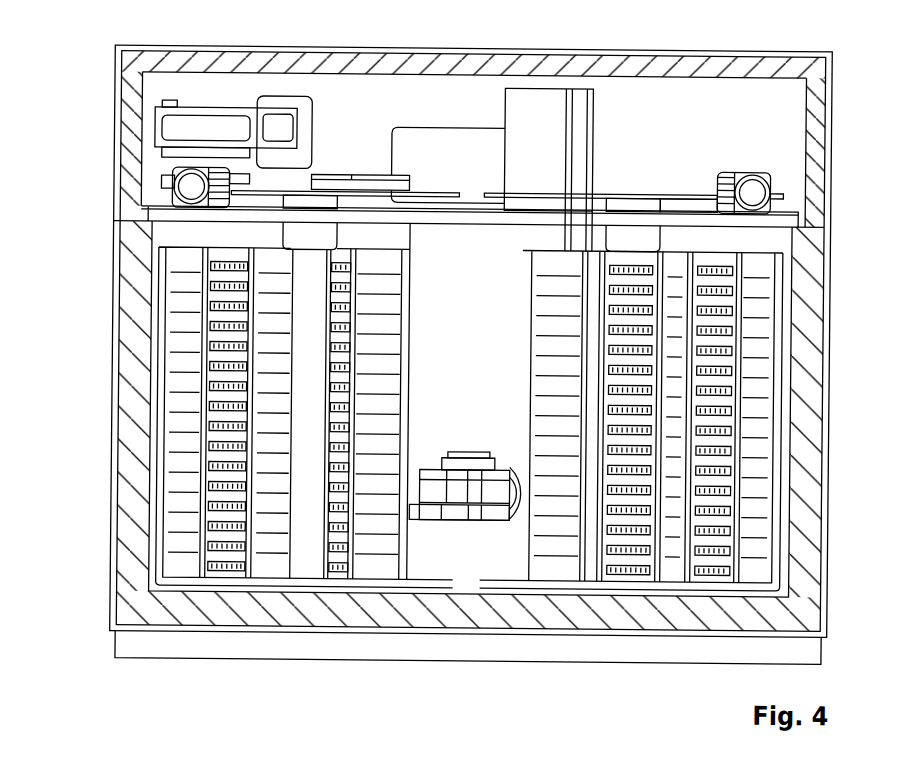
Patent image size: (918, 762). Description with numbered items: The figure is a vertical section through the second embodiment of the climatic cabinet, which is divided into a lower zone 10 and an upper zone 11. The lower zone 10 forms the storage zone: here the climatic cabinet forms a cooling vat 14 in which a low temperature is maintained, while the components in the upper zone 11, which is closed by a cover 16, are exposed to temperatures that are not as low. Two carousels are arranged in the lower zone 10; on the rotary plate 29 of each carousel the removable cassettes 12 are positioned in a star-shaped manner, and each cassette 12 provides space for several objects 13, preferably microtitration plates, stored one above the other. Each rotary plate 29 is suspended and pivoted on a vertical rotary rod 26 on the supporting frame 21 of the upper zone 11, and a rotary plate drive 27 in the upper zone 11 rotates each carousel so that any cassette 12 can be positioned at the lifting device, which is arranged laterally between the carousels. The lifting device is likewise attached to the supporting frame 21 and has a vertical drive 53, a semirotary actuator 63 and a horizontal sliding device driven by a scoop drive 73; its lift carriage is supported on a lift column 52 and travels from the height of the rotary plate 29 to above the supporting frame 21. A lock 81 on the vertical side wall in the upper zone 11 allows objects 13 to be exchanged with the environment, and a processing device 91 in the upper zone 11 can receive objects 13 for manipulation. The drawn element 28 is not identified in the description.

The lower zone 10 is at (102, 406).
The upper zone 11 is at (106, 126).
The removable cassette 12 is at (191, 428).
The object 13 is at (211, 268).
The cooling vat 14 is at (130, 571).
The cover 16 is at (126, 83).
The supporting frame 21 is at (783, 211).
The vertical rotary rod 26 is at (309, 238).
The rotary plate drive 27 is at (188, 183).
The support bracket 28 is at (681, 191).
The rotary plate 29 is at (227, 585).
The lift column 52 is at (526, 100).
The vertical drive 53 is at (518, 486).
The semirotary actuator 63 is at (456, 462).
The scoop drive 73 is at (495, 510).
The lock 81 is at (431, 128).
The processing device 91 is at (228, 125).